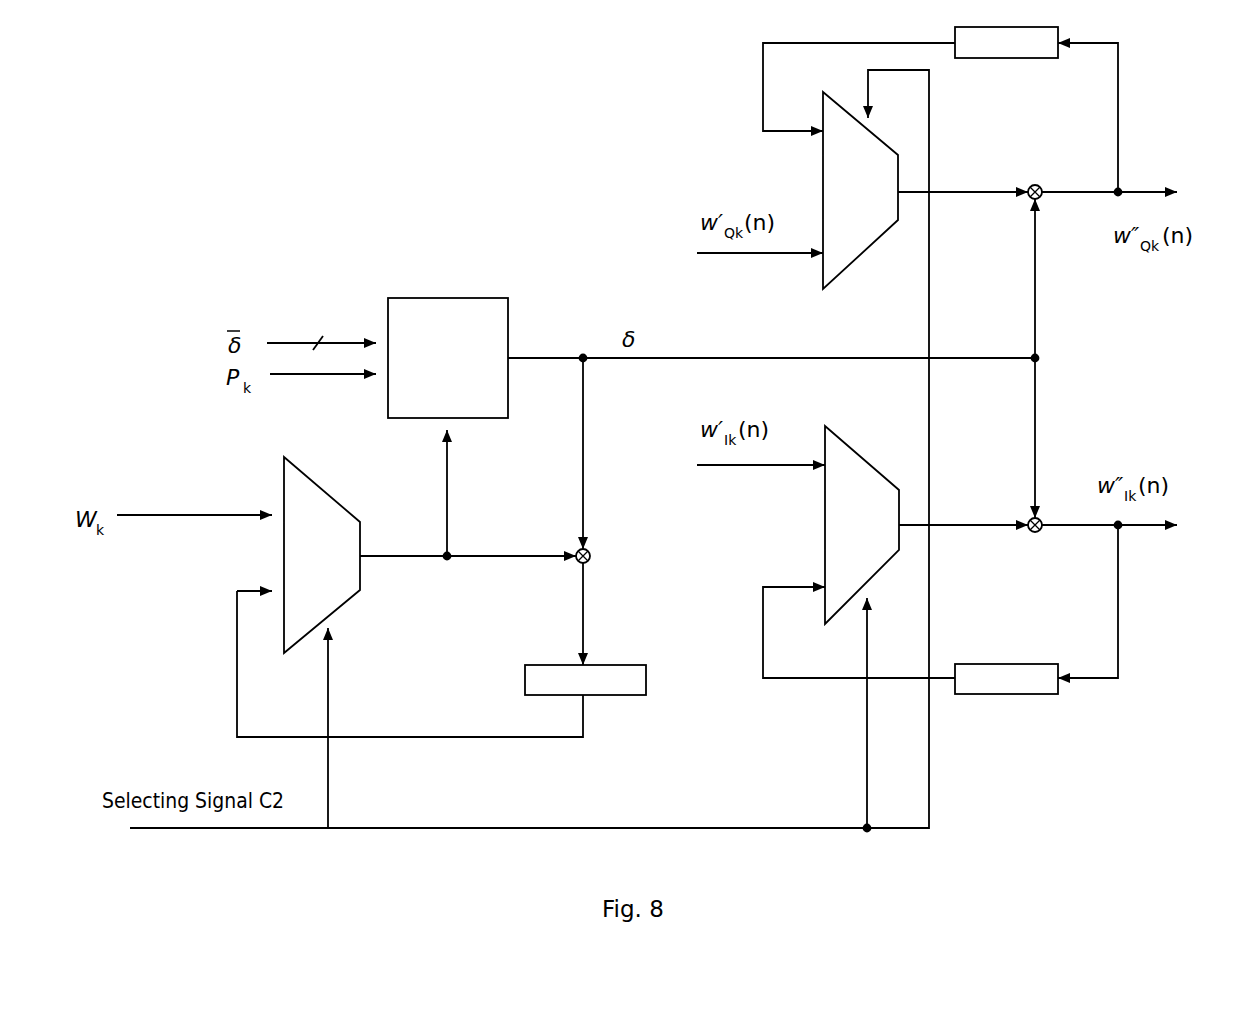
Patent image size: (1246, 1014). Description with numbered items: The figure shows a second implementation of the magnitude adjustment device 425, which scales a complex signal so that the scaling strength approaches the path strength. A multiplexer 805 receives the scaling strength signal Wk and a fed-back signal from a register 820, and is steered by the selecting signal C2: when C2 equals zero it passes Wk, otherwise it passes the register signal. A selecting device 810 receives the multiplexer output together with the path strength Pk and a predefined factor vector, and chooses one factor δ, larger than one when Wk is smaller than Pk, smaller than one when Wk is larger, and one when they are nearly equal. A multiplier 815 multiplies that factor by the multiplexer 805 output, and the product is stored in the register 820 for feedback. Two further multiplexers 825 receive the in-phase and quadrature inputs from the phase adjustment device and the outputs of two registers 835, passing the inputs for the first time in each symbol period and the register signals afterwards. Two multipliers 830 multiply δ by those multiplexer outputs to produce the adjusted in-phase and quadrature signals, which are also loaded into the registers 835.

The magnitude adjustment device 425 is at (383, 139).
The multiplexer 805 is at (342, 605).
The selecting device 810 is at (480, 420).
The multiplier 815 is at (591, 562).
The register 820 is at (598, 697).
The multiplexers 825 is at (826, 360).
The multipliers 830 is at (1037, 358).
The registers 835 is at (1036, 360).